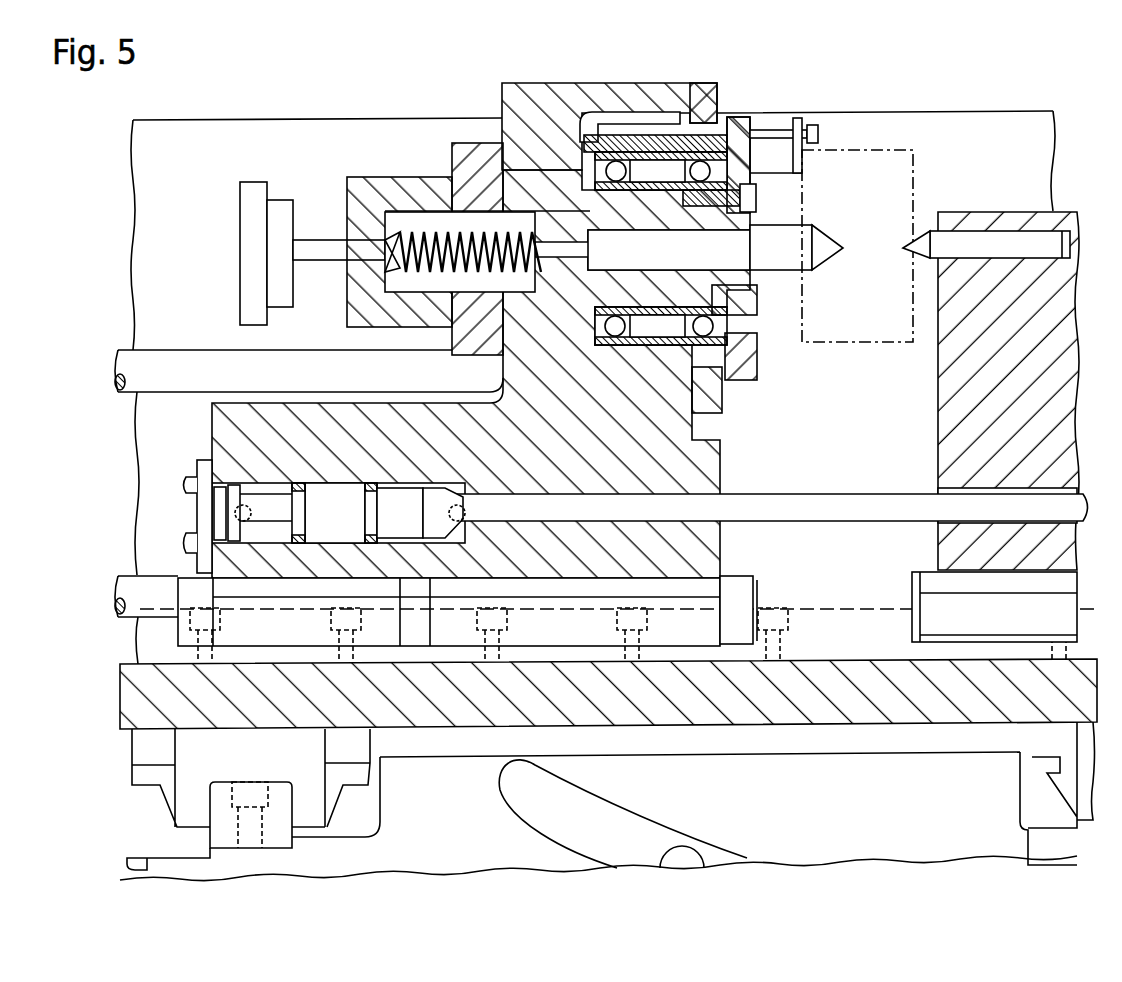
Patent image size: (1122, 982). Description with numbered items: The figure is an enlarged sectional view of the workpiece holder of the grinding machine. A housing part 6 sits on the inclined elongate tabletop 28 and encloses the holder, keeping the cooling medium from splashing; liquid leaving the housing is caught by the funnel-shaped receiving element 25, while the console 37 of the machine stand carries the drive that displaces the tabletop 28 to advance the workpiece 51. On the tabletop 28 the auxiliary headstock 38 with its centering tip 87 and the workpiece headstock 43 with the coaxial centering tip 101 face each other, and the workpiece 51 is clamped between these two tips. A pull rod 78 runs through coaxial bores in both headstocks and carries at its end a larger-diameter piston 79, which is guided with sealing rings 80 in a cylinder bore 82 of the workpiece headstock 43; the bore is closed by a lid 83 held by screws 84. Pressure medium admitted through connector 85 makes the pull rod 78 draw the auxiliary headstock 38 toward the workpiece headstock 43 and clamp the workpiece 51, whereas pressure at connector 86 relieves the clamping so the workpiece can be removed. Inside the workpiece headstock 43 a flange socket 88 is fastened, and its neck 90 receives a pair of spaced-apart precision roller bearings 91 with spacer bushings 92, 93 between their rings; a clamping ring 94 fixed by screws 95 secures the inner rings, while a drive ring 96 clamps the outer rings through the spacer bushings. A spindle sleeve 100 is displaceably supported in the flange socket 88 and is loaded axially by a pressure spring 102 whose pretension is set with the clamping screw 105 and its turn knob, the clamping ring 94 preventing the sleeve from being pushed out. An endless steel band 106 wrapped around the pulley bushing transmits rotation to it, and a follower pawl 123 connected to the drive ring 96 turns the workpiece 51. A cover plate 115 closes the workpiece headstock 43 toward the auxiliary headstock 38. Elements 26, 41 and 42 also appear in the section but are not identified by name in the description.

The housing part 6 is at (207, 140).
The funnel-shaped receiving element 25 is at (1047, 740).
The base carrier 26 is at (350, 750).
The elongate tabletop 28 is at (783, 707).
The console 37 is at (918, 590).
The auxiliary headstock 38 is at (1027, 220).
The stop block 41 is at (742, 597).
The fastening screw 42 is at (196, 598).
The workpiece headstock 43 is at (582, 95).
The workpiece 51 is at (879, 172).
The pull rod 78 is at (868, 497).
The piston 79 is at (333, 503).
The sealing rings 80 is at (298, 483).
The cylinder bore 82 is at (257, 487).
The lid 83 is at (200, 520).
The screws 84 is at (188, 480).
The connector 85 is at (455, 525).
The connector 86 is at (248, 520).
The centering tip 87 is at (985, 242).
The flange socket 88 is at (480, 147).
The neck 90 is at (653, 300).
The precision roller bearings 91 is at (655, 347).
The spacer bushing 92 is at (672, 140).
The spacer bushing 93 is at (702, 118).
The clamping ring 94 is at (757, 298).
The screws 95 is at (757, 200).
The drive ring 96 is at (743, 348).
The spindle sleeve 100 is at (540, 217).
The centering tip 101 is at (822, 243).
The pressure spring 102 is at (413, 208).
The clamping screw 105 is at (327, 247).
The endless steel band 106 is at (648, 152).
The cover plate 115 is at (723, 398).
The follower pawl 123 is at (812, 128).